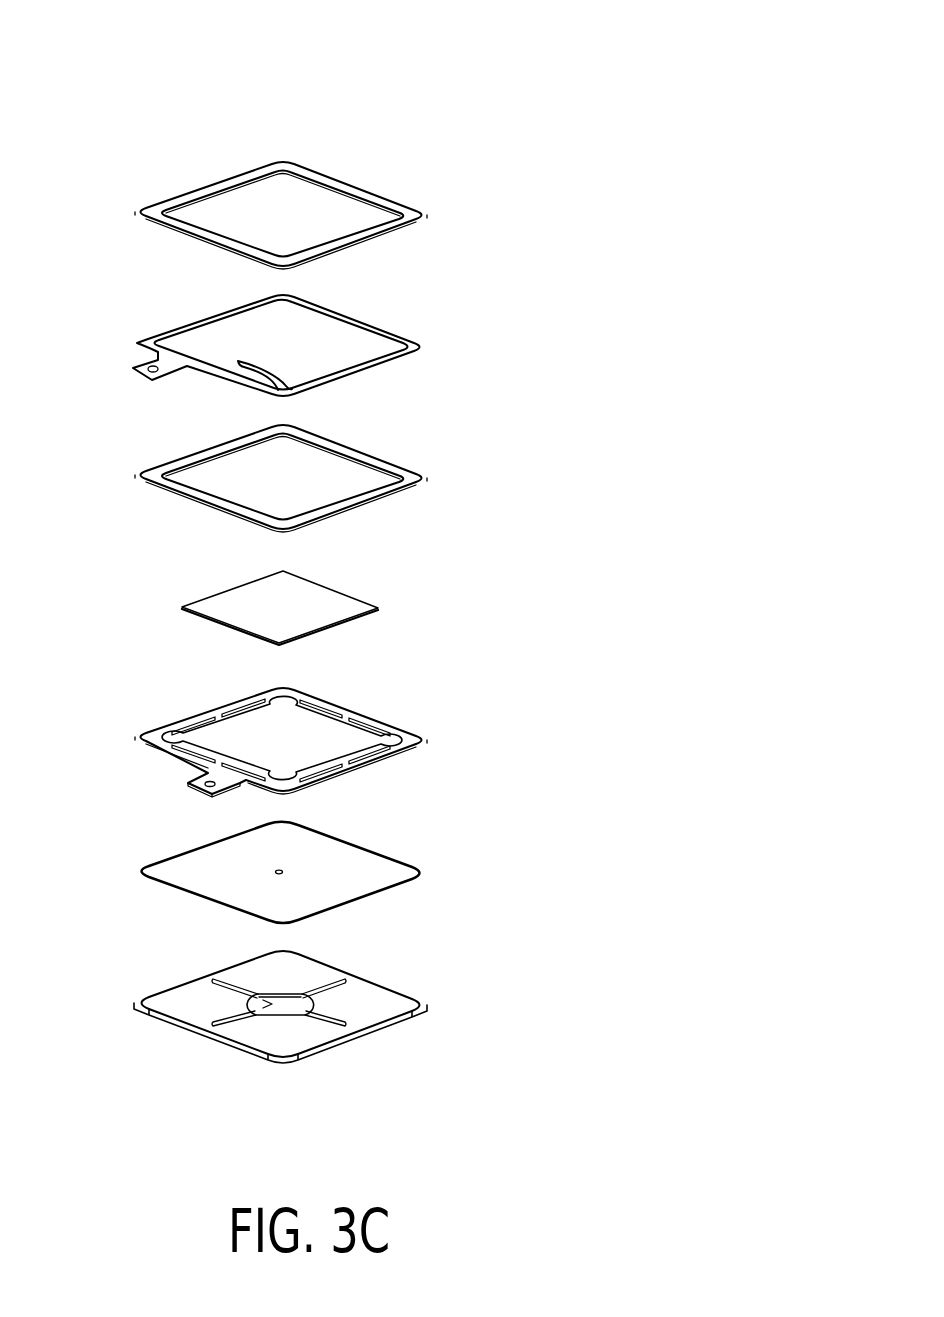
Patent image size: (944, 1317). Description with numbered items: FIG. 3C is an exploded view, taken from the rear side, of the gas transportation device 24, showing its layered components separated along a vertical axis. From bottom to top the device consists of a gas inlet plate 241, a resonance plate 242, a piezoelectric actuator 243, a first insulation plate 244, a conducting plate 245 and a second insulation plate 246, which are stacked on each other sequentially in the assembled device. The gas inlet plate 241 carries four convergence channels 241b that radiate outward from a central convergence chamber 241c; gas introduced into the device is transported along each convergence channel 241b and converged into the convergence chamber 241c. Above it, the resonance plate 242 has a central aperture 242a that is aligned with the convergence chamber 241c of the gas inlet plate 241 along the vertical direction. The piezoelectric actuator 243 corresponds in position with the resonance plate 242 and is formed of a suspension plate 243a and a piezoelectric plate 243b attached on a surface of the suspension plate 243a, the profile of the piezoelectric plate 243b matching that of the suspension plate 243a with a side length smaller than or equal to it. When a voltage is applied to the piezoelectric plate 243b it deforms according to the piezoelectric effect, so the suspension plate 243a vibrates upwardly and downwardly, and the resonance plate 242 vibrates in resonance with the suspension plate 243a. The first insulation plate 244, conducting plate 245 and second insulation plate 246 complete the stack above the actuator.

The gas transportation device 24 is at (681, 50).
The second insulation plate 246 is at (402, 200).
The conducting plate 245 is at (410, 335).
The first insulation plate 244 is at (402, 460).
The piezoelectric actuator 243 is at (537, 565).
The piezoelectric plate 243b is at (337, 602).
The suspension plate 243a is at (347, 743).
The resonance plate 242 is at (360, 853).
The central aperture 242a is at (275, 867).
The gas inlet plate 241 is at (315, 998).
The convergence chamber 241c is at (256, 996).
The convergence channel 241b is at (343, 1020).